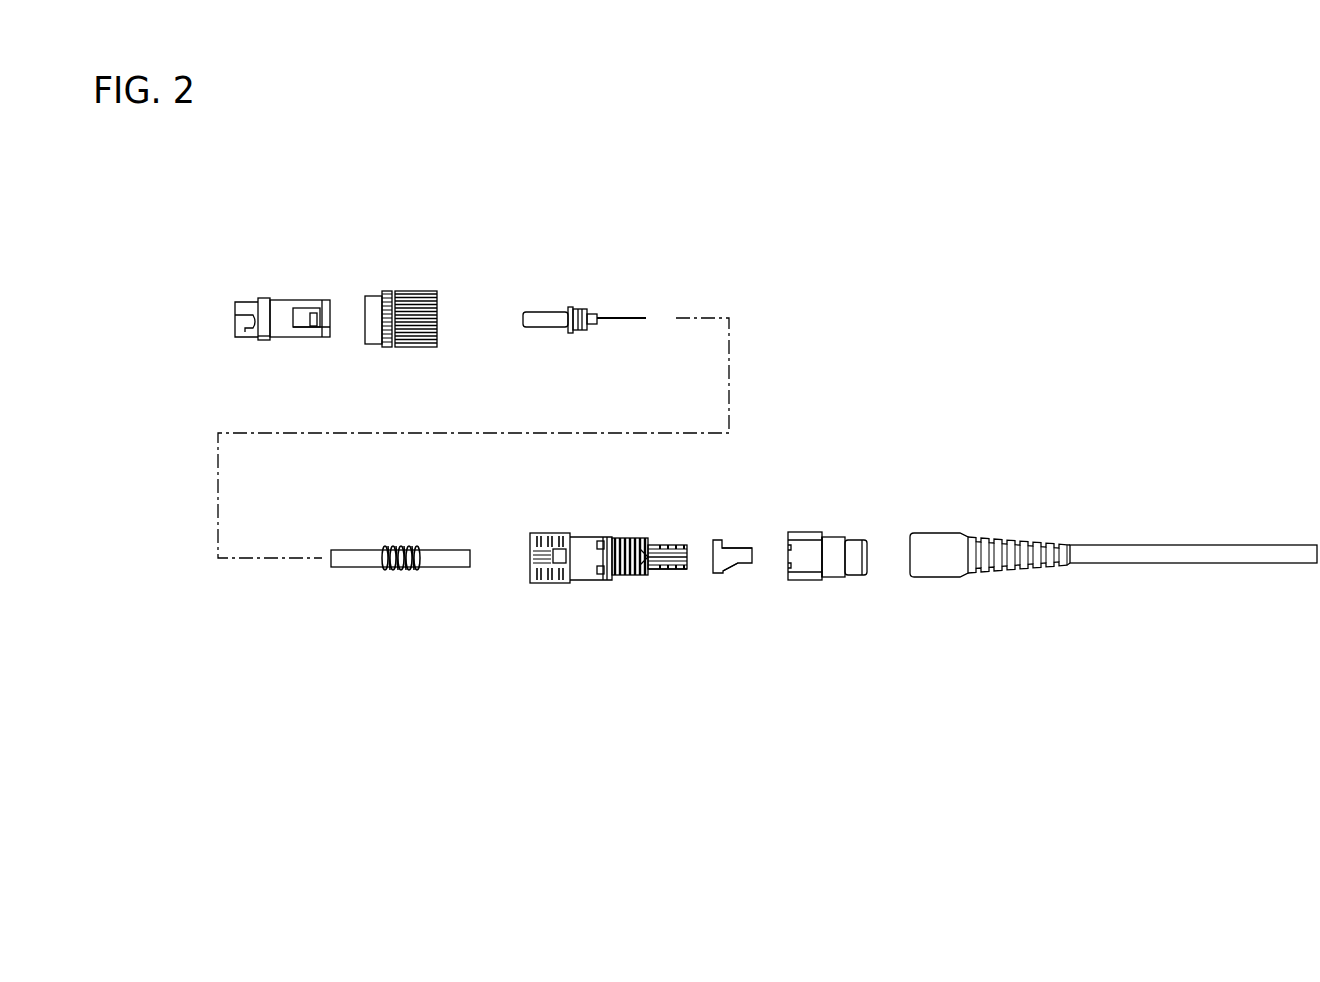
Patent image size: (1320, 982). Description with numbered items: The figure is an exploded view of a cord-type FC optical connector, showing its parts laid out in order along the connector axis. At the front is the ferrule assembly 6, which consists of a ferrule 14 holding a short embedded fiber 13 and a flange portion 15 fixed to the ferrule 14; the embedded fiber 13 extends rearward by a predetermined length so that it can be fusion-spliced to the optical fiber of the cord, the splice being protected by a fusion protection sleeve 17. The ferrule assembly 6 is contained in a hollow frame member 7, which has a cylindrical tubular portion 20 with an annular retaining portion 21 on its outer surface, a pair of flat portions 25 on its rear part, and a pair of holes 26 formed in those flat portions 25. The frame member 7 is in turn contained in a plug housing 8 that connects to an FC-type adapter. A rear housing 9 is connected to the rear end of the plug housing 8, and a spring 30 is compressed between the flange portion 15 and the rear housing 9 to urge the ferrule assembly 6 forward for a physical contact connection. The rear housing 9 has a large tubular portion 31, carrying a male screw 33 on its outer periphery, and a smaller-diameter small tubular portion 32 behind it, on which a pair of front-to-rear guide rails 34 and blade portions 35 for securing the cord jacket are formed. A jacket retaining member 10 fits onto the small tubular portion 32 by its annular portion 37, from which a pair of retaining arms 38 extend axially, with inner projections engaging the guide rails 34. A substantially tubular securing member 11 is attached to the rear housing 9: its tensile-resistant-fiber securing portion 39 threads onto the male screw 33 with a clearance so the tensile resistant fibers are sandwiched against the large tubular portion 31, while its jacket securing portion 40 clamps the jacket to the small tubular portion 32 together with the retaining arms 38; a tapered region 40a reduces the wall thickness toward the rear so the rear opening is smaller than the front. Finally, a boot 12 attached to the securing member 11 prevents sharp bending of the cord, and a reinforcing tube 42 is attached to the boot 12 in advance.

The ferrule assembly 6 is at (596, 270).
The frame member 7 is at (277, 290).
The plug housing 8 is at (408, 300).
The rear housing 9 is at (582, 532).
The jacket retaining member 10 is at (738, 571).
The securing member 11 is at (856, 560).
The boot 12 is at (943, 568).
The embedded fiber 13 is at (648, 318).
The ferrule 14 is at (537, 318).
The flange portion 15 is at (571, 310).
The fusion protection sleeve 17 is at (362, 552).
The tubular portion 20 is at (239, 307).
The retaining portion 21 is at (263, 338).
The flat portions 25 is at (302, 322).
The holes 26 is at (314, 326).
The spring 30 is at (400, 572).
The large tubular portion 31 is at (645, 547).
The small tubular portion 32 is at (687, 571).
The male screw 33 is at (623, 540).
The guide rails 34 is at (655, 571).
The blade portions 35 is at (662, 545).
The annular portion 37 is at (722, 574).
The retaining arms 38 is at (745, 548).
The tensile-resistant-fiber securing portion 39 is at (829, 540).
The jacket securing portion 40 is at (855, 576).
The tapered region 40a is at (848, 545).
The reinforcing tube 42 is at (1187, 553).